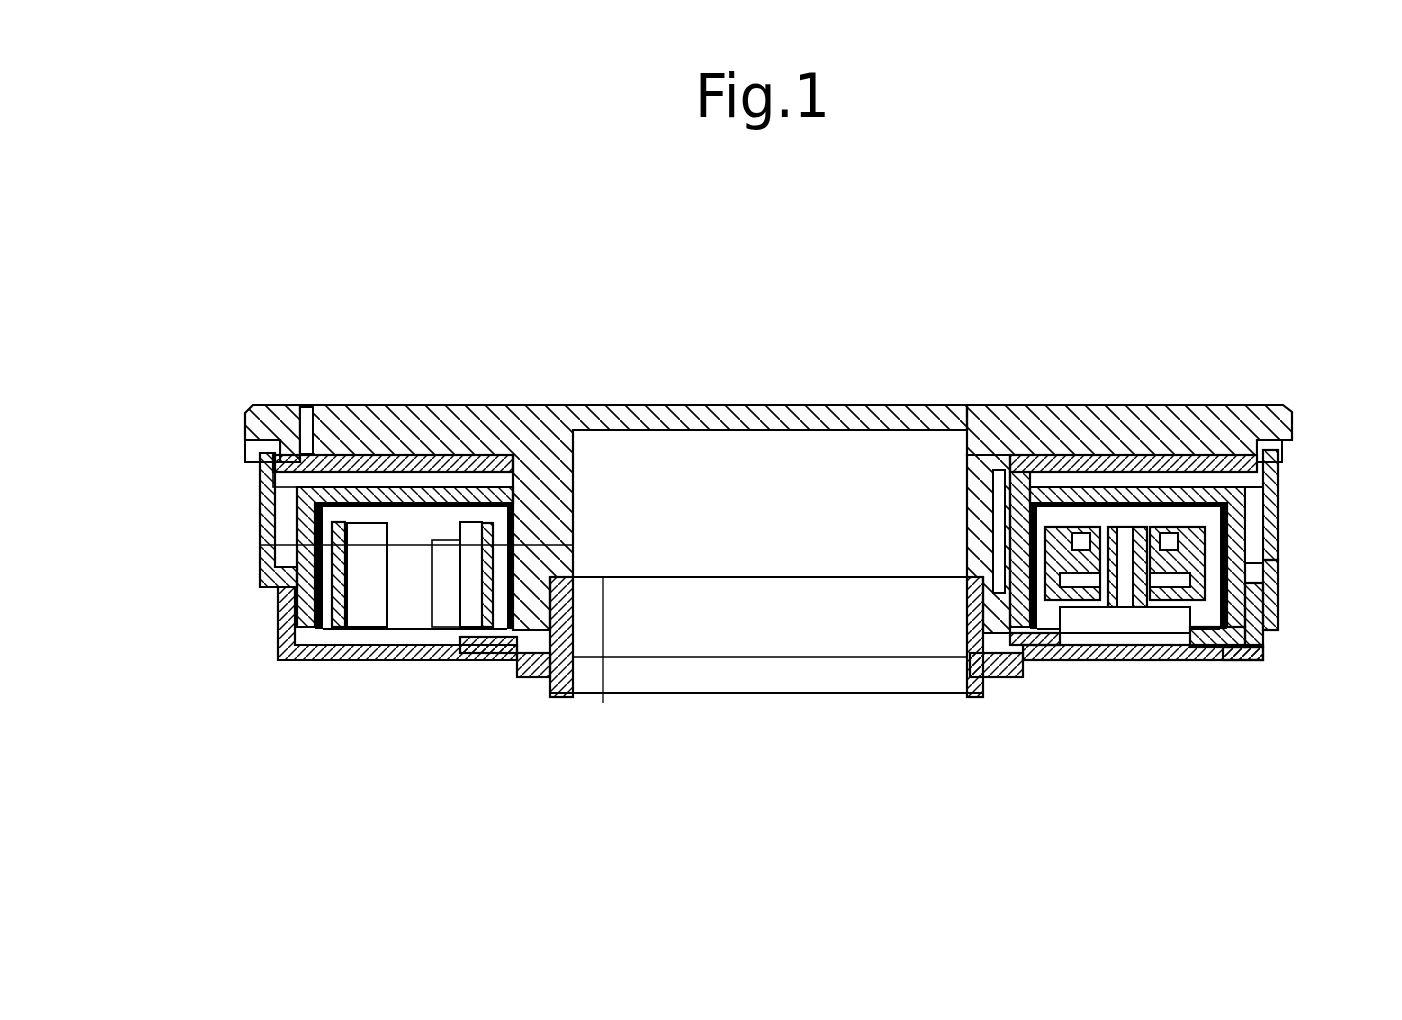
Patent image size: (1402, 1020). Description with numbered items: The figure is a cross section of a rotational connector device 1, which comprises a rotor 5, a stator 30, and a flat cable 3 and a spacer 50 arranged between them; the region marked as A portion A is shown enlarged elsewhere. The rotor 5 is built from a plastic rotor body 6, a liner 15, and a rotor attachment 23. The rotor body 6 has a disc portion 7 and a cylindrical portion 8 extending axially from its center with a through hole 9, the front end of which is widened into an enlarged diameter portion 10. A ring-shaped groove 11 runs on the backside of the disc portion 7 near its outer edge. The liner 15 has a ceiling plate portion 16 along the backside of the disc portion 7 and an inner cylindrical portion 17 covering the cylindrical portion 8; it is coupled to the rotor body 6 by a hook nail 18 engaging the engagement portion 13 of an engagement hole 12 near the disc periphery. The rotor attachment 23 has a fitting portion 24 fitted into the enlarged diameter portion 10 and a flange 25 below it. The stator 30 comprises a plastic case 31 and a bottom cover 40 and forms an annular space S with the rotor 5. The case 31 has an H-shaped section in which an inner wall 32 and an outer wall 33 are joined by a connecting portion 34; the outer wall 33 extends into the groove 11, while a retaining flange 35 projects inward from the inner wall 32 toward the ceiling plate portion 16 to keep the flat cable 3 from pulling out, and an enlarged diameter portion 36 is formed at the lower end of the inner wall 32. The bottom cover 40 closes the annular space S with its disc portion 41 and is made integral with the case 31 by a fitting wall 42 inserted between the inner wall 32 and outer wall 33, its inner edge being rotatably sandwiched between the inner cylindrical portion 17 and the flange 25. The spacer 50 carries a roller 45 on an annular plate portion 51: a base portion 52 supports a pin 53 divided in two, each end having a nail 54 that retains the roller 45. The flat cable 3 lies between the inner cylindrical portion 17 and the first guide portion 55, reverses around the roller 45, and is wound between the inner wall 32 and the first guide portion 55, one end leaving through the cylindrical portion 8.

The rotational connector device 1 is at (885, 270).
The flat cable 3 is at (360, 487).
The rotor 5 is at (760, 290).
The rotor body 6 is at (523, 403).
The disc portion 7 is at (1176, 455).
The cylindrical portion 8 is at (967, 502).
The through hole 9 is at (967, 467).
The enlarged diameter portion 10 is at (967, 612).
The ring-shaped groove 11 is at (1292, 462).
The engagement hole 12 is at (312, 404).
The engagement portion 13 is at (257, 433).
The liner 15 is at (573, 500).
The ceiling plate portion 16 is at (413, 478).
The inner cylindrical portion 17 is at (573, 537).
The hook nail 18 is at (281, 404).
The rotor attachment 23 is at (573, 617).
The fitting portion 24 is at (967, 583).
The flange 25 is at (1003, 673).
The stator 30 is at (170, 605).
The case 31 is at (267, 553).
The inner wall 32 is at (1278, 538).
The outer wall 33 is at (1278, 603).
The connecting portion 34 is at (1278, 567).
The retaining flange 35 is at (1218, 458).
The enlarged diameter portion 36 is at (1233, 660).
The bottom cover 40 is at (300, 660).
The disc portion 41 is at (1107, 658).
The fitting wall 42 is at (1247, 660).
The roller 45 is at (1278, 512).
The spacer 50 is at (500, 658).
The annular plate portion 51 is at (1035, 660).
The base portion 52 is at (1187, 660).
The pin 53 is at (1142, 660).
The nail 54 is at (1147, 523).
The first guide portion 55 is at (350, 568).
The annular space S is at (418, 542).
The A portion A is at (598, 560).